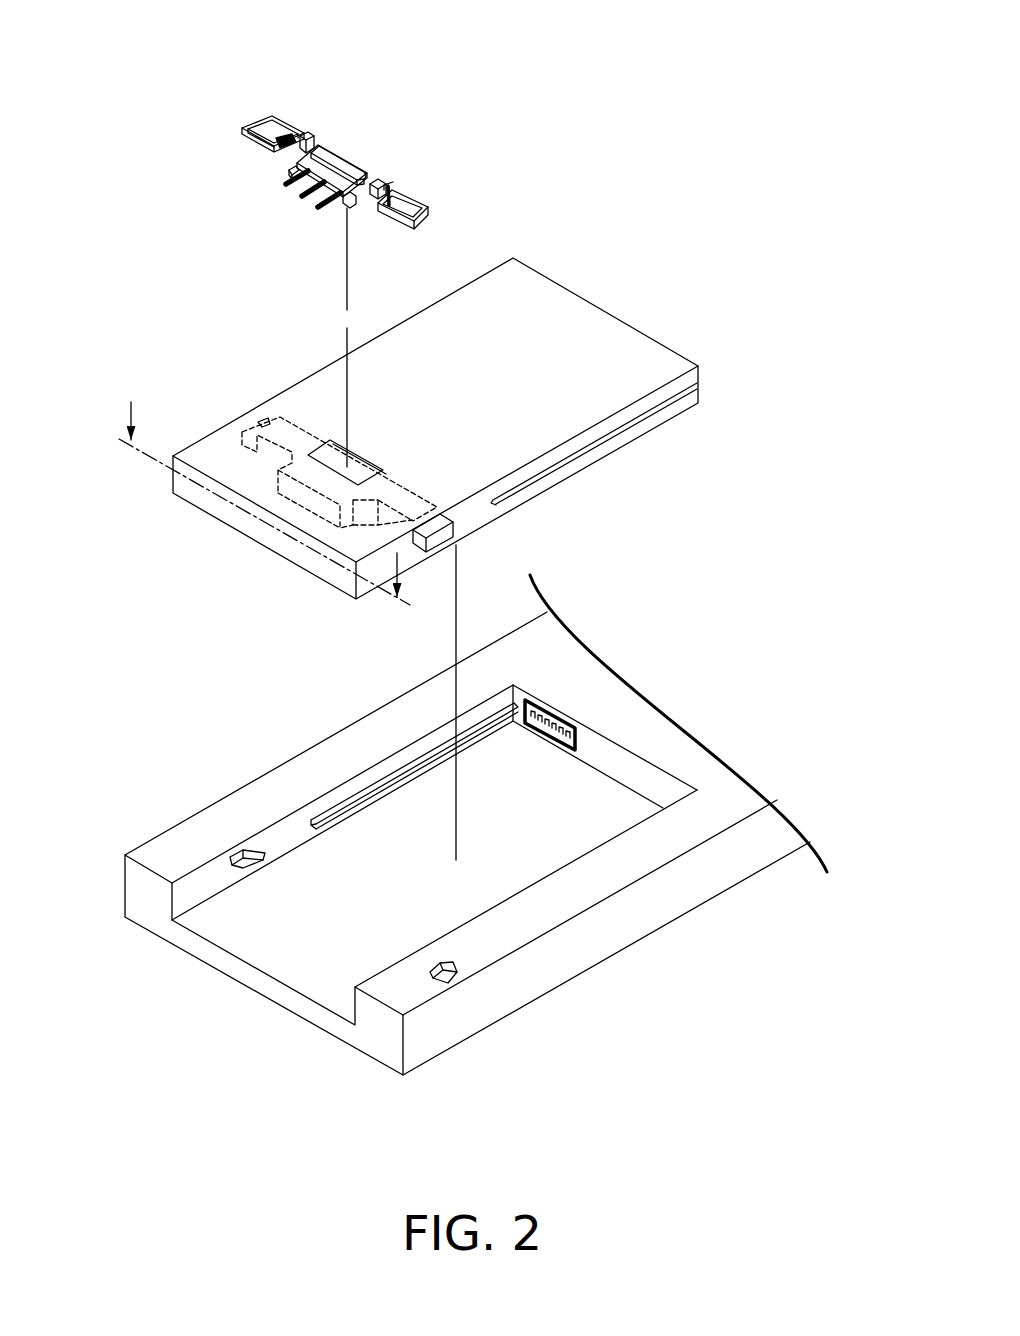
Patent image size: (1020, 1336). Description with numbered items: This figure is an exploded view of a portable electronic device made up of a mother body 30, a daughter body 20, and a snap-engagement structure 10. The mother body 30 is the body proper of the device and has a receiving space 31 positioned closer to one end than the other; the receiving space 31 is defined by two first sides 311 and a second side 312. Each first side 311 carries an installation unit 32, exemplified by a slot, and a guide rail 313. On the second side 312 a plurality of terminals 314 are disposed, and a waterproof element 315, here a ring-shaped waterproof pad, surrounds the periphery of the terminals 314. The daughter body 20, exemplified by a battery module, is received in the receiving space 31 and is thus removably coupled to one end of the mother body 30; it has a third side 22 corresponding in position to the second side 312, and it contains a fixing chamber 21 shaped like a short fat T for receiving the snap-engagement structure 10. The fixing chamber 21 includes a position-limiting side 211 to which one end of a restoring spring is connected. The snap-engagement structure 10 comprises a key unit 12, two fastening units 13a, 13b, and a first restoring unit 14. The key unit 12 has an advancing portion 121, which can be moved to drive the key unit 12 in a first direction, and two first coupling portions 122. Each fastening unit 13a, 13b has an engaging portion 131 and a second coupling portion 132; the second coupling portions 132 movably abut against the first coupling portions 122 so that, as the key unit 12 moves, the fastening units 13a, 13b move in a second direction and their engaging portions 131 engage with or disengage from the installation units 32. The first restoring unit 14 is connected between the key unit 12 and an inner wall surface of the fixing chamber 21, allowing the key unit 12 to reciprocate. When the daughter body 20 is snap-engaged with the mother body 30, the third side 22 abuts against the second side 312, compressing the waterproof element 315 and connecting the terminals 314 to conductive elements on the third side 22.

The snap-engagement structure 10 is at (223, 116).
The key unit 12 is at (371, 157).
The advancing portion 121 is at (342, 157).
The first coupling portion 122 is at (302, 136).
The fastening unit 13a is at (265, 110).
The fastening unit 13b is at (426, 187).
The engaging portion 131 is at (254, 123).
The second coupling portion 132 is at (267, 143).
The first restoring unit 14 is at (295, 197).
The daughter body 20 is at (208, 359).
The fixing chamber 21 is at (292, 489).
The position-limiting side 211 is at (261, 423).
The third side 22 is at (604, 298).
The mother body 30 is at (146, 811).
The receiving space 31 is at (205, 930).
The first side 311 is at (390, 968).
The second side 312 is at (642, 773).
The guide rail 313 is at (355, 802).
The terminal 314 is at (560, 707).
The waterproof element 315 is at (528, 697).
The installation unit 32 is at (253, 848).